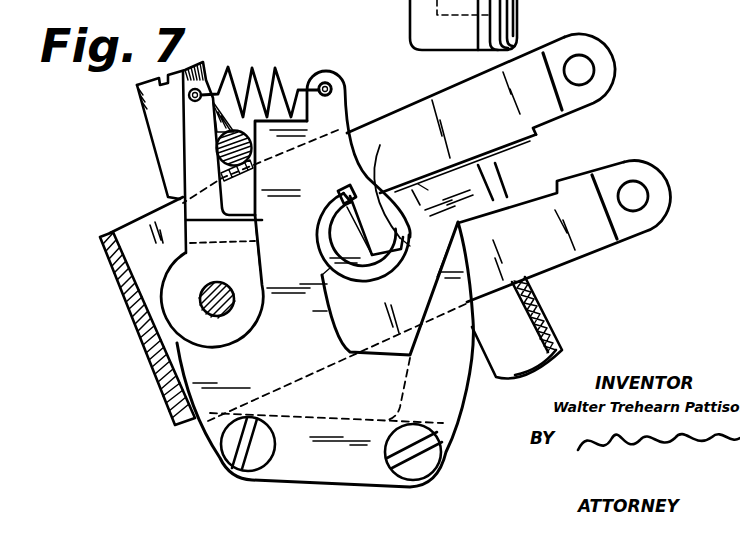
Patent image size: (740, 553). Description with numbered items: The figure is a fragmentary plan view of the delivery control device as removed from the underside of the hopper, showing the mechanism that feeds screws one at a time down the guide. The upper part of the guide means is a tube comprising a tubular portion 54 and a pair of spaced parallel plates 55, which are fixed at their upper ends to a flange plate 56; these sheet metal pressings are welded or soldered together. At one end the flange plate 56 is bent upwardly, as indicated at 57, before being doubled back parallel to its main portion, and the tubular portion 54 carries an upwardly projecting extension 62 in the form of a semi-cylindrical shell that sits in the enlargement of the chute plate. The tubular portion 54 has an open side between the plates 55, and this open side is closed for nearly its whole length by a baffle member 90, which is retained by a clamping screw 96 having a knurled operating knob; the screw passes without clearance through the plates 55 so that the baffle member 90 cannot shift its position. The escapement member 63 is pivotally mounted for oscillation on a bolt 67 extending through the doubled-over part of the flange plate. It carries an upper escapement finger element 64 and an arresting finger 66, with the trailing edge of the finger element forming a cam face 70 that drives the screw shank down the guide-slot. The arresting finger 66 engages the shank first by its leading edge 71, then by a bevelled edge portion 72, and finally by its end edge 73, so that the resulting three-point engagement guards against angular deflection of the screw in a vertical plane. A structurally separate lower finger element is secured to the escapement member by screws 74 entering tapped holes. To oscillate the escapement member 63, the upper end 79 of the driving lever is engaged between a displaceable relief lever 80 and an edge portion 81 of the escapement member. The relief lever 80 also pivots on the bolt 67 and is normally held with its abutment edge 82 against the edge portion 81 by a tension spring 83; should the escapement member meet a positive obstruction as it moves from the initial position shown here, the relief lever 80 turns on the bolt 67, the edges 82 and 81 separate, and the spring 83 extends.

The tubular portion 54 is at (322, 275).
The spaced parallel plates 55 is at (533, 130).
The flange plate 56 is at (588, 246).
The upwardly bent portion of flange plate 57 is at (152, 353).
The upwardly projecting extension 62 is at (326, 214).
The escapement member 63 is at (172, 408).
The upper escapement finger element 64 is at (447, 386).
The arresting finger 66 is at (398, 232).
The bolt 67 is at (205, 298).
The cam face 70 is at (437, 277).
The leading edge of arresting finger 71 is at (423, 185).
The bevelled edge portion 72 is at (400, 240).
The end edge of arresting finger 73 is at (378, 265).
The screws 74 is at (228, 443).
The upper end of driving lever 79 is at (215, 147).
The relief lever 80 is at (193, 233).
The edge portion of escapement member 81 is at (268, 132).
The abutment face edge of relief lever 82 is at (258, 251).
The tension spring 83 is at (245, 85).
The baffle member 90 is at (492, 205).
The clamping screw 96 is at (562, 340).